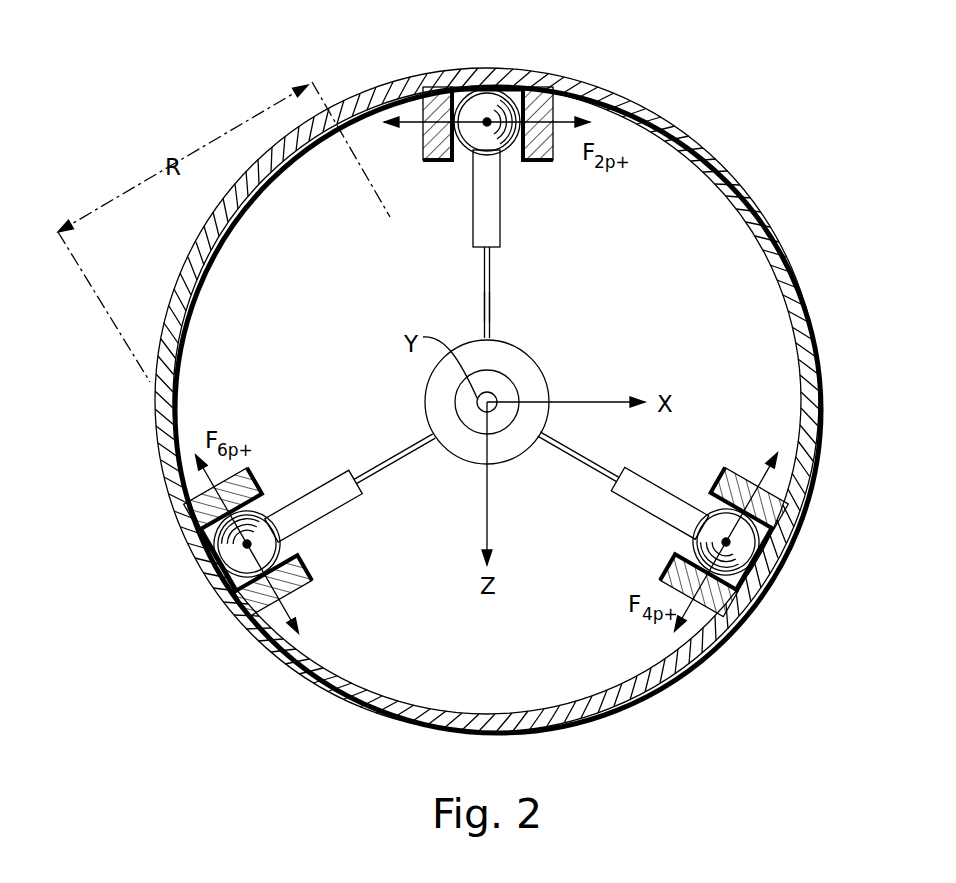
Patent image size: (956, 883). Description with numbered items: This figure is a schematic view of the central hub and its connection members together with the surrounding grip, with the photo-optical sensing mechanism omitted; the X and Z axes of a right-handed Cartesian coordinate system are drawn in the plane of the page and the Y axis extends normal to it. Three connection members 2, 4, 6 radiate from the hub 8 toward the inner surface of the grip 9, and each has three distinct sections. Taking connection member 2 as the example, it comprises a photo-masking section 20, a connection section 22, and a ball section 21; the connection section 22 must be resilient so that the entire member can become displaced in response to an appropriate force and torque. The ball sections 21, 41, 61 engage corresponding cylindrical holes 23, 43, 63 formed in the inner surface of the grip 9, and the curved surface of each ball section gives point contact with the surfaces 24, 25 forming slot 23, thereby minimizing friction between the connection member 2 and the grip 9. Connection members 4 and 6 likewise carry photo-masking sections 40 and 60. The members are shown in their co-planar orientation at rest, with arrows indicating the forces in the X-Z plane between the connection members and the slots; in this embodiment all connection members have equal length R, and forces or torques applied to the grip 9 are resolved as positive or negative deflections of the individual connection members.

The connection member 2 is at (491, 265).
The connection member 4 is at (600, 458).
The connection member 6 is at (387, 458).
The hub 8 is at (541, 366).
The grip 9 is at (755, 192).
The photo-masking section 20 is at (497, 167).
The ball section 21 is at (470, 152).
The connection section 22 is at (491, 302).
The cylindrical hole (slot) 23 is at (463, 88).
The surface 24 is at (462, 88).
The surface 25 is at (516, 90).
The photo-masking section 40 is at (667, 490).
The ball section 41 is at (693, 546).
The cylindrical hole (slot) 43 is at (745, 574).
The photo-masking section 60 is at (332, 517).
The ball section 61 is at (215, 553).
The cylindrical hole (slot) 63 is at (225, 578).